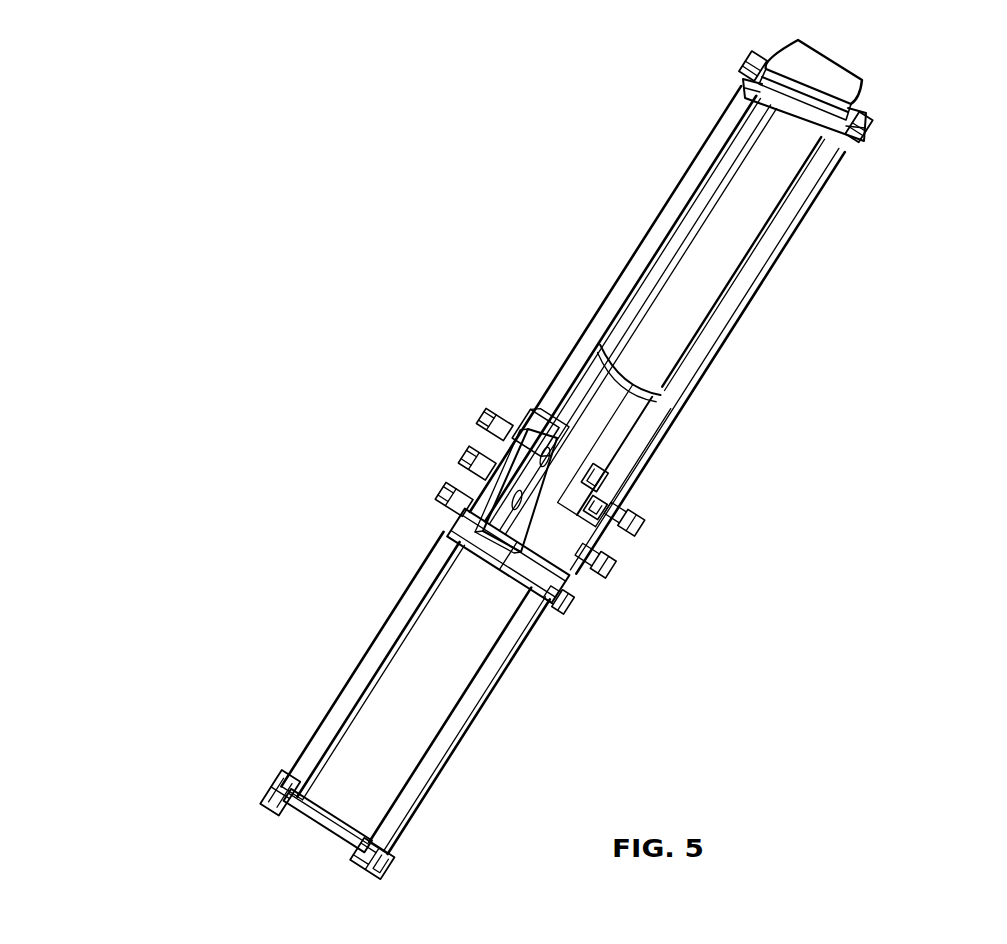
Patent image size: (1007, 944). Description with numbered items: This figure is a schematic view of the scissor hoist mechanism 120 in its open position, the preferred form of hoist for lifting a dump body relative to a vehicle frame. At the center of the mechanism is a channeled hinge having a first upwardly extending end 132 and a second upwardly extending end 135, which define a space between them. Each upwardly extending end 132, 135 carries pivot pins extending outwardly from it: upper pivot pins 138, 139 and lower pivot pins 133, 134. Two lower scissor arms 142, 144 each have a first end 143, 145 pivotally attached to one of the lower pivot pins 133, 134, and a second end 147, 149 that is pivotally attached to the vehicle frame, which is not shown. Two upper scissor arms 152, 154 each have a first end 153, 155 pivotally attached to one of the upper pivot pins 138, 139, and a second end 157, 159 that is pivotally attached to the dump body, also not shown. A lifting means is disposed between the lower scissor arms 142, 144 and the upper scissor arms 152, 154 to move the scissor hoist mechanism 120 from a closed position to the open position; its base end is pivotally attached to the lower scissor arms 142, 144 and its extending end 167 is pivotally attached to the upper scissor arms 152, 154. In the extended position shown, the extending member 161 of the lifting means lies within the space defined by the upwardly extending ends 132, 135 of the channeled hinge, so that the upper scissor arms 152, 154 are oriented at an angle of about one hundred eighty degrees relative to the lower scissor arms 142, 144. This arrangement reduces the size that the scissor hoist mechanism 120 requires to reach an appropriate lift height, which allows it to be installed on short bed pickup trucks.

The scissor hoist mechanism 120 is at (780, 460).
The first upwardly extending end 132 is at (535, 432).
The lower pivot pin 133 is at (487, 421).
The lower pivot pin 134 is at (643, 517).
The second upwardly extending end 135 is at (603, 527).
The upper pivot pin 138 is at (465, 470).
The upper pivot pin 139 is at (595, 565).
The lower scissor arm 142 is at (652, 224).
The first end 143 is at (523, 430).
The lower scissor arm 144 is at (795, 238).
The first end 145 is at (608, 495).
The second end 147 is at (768, 48).
The second end 149 is at (858, 110).
The upper scissor arm 152 is at (343, 693).
The first end 153 is at (453, 506).
The upper scissor arm 154 is at (460, 740).
The first end 155 is at (575, 582).
The second end 157 is at (273, 797).
The second end 159 is at (352, 860).
The extending member 161 is at (592, 442).
The extending end 167 is at (500, 578).